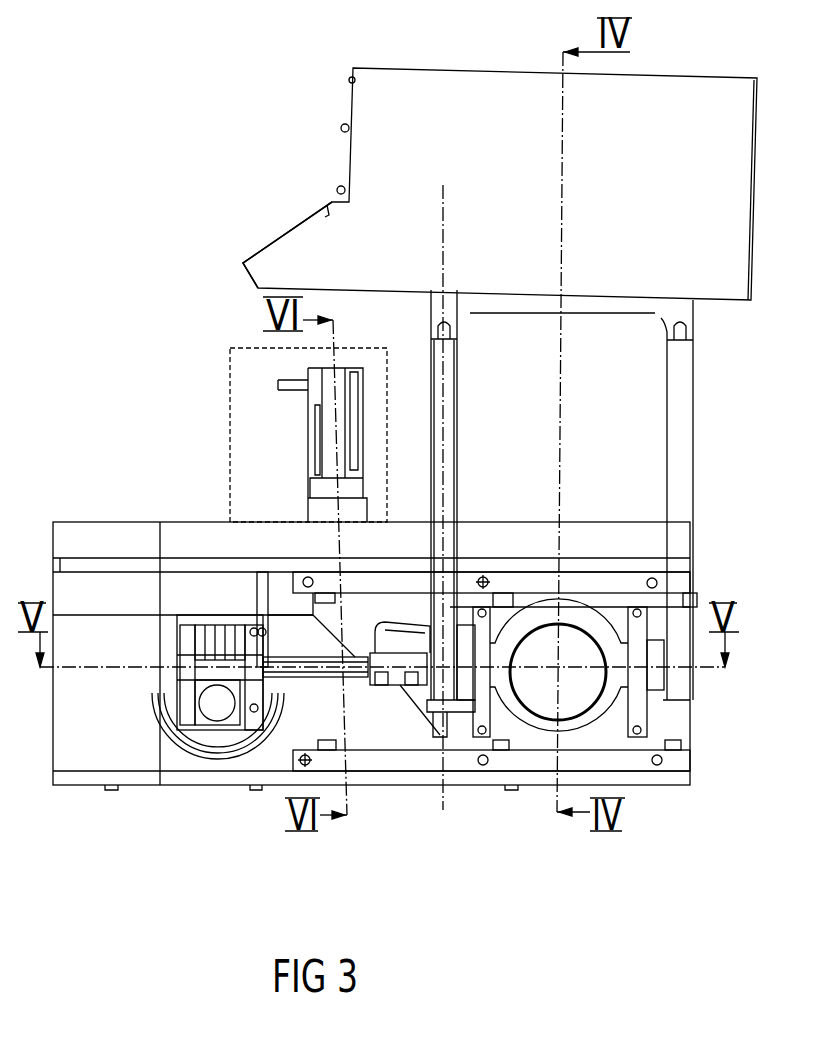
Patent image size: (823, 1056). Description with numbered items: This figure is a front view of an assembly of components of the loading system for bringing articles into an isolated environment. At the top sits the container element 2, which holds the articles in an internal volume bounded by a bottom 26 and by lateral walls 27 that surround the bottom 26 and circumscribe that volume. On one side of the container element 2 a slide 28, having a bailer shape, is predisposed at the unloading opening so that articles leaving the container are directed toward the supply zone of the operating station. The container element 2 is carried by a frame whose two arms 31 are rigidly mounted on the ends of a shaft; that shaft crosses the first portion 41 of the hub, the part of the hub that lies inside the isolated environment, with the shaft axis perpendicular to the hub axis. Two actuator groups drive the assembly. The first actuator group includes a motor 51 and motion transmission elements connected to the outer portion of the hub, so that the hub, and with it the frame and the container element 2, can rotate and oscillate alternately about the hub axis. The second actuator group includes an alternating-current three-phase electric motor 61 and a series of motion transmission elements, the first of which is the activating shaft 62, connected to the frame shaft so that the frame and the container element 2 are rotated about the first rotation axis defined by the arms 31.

The container element 2 is at (310, 115).
The lateral walls 27 is at (648, 218).
The slide 28 is at (268, 250).
The bottom 26 is at (400, 292).
The arms 31 is at (685, 445).
The motor 51 is at (303, 395).
The motor 61 is at (178, 732).
The activating shaft 62 is at (288, 677).
The first portion 41 is at (580, 695).